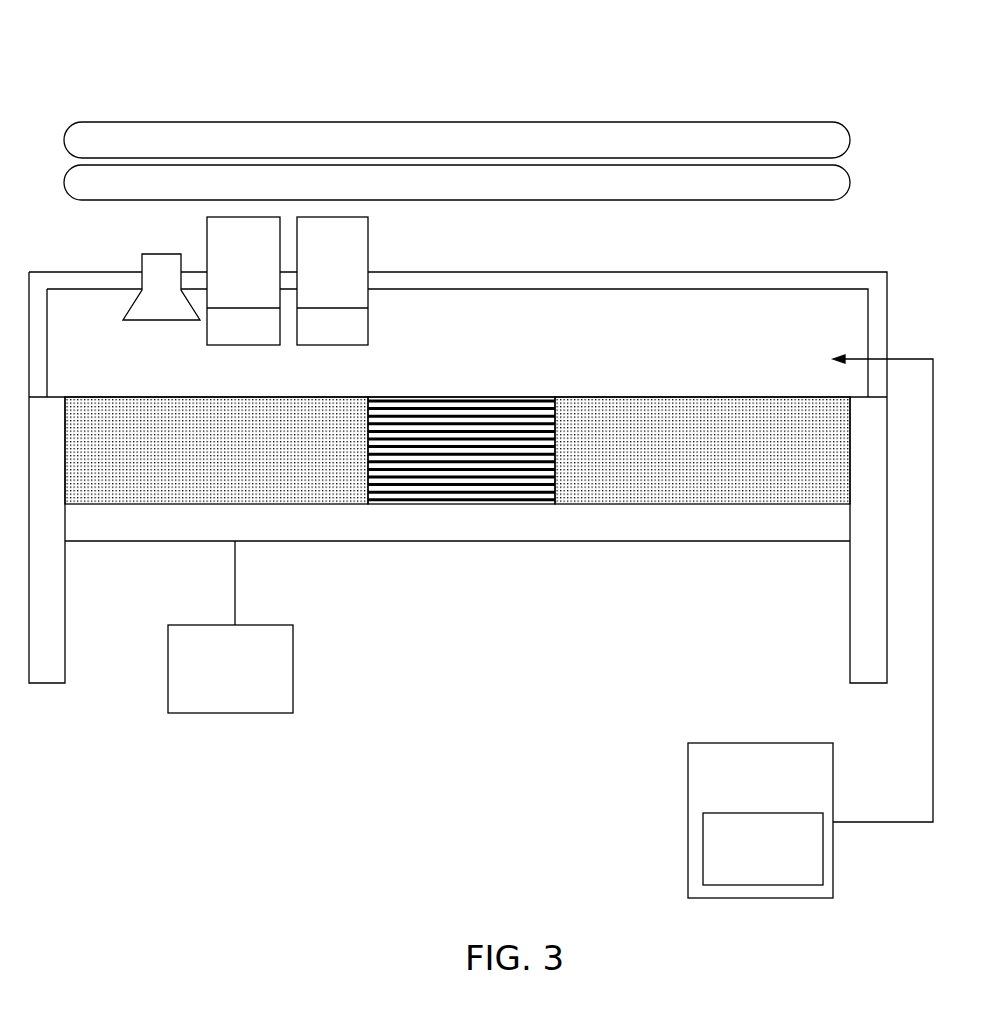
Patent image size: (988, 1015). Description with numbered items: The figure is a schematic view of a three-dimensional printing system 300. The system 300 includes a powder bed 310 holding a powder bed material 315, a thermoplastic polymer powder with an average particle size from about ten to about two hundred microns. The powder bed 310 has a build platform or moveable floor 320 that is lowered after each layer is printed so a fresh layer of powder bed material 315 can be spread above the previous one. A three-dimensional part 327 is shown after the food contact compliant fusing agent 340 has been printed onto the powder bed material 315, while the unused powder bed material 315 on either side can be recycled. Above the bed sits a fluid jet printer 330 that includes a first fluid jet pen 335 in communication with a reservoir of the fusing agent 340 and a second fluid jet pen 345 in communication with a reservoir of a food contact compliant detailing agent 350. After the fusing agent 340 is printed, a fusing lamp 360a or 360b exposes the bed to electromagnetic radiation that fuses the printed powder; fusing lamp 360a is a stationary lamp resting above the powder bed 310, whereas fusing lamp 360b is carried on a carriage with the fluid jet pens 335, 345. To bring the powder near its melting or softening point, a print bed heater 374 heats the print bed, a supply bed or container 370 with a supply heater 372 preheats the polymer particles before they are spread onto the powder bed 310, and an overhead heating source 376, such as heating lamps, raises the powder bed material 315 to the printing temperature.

The three-dimensional printing system 300 is at (130, 98).
The powder bed 310 is at (756, 578).
The powder bed material 315 is at (700, 410).
The build platform or moveable floor 320 is at (582, 520).
The three-dimensional part 327 is at (520, 415).
The fluid jet printer 330 is at (858, 245).
The first fluid jet pen 335 is at (185, 353).
The food contact compliant fusing agent 340 is at (243, 281).
The second fluid jet pen 345 is at (405, 322).
The food contact compliant detailing agent 350 is at (332, 281).
The fusing lamp 360a is at (545, 185).
The fusing lamp 360b is at (155, 262).
The supply bed or container 370 is at (810, 626).
The supply heater 372 is at (763, 849).
The print bed heater 374 is at (230, 627).
The overhead heating source 376 is at (475, 145).